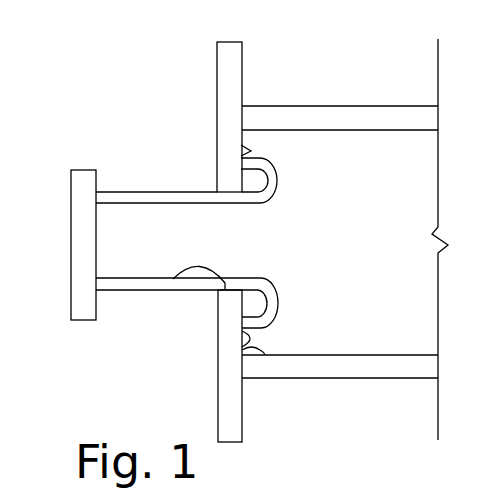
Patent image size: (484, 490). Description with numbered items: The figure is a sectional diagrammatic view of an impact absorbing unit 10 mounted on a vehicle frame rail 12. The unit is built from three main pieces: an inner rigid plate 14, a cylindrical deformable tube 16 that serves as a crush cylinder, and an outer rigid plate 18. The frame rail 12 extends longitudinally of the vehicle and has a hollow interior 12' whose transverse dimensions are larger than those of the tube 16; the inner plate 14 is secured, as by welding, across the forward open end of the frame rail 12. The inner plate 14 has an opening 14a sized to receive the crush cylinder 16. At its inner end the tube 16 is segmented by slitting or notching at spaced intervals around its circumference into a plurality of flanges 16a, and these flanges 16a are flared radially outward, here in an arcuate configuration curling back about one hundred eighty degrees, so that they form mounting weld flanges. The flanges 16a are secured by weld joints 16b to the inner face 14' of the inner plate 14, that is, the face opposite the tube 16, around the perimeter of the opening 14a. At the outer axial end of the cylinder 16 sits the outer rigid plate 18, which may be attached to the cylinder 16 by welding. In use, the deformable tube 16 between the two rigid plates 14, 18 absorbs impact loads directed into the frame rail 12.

The impact absorbing unit 10 is at (174, 70).
The vehicle frame rail 12 is at (345, 220).
The hollow interior 12' is at (340, 399).
The inner rigid plate 14 is at (207, 242).
The opening 14a is at (177, 275).
The inner face 14' is at (282, 402).
The cylindrical deformable tube 16 is at (133, 192).
The flanges 16a is at (272, 182).
The weld joints 16b is at (250, 150).
The outer rigid plate 18 is at (78, 195).